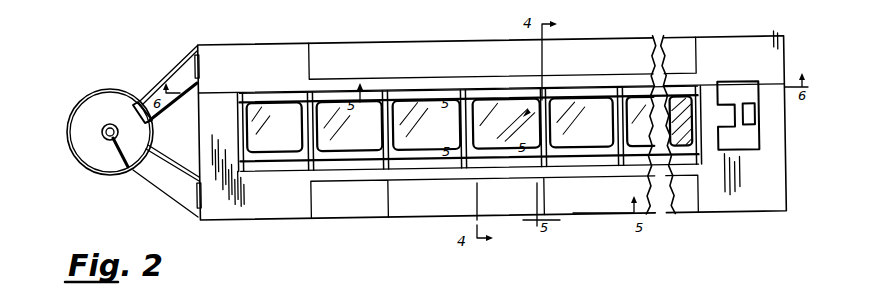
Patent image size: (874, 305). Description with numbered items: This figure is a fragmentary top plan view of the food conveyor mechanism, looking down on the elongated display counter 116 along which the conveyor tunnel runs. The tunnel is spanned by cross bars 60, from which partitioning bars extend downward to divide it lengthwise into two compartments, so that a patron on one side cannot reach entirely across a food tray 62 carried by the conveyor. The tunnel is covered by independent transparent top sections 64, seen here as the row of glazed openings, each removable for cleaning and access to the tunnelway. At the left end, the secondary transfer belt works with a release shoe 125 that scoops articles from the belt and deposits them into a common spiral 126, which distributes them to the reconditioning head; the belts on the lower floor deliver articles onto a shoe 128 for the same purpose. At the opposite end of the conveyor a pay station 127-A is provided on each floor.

The display counter 116 is at (563, 48).
The cross bars 60 is at (458, 87).
The food tray 62 is at (413, 147).
The top section 64 is at (637, 147).
The pay station 127-A is at (745, 97).
The common spiral 126 is at (88, 125).
The release shoe 125 is at (181, 73).
The shoe 128 is at (163, 178).